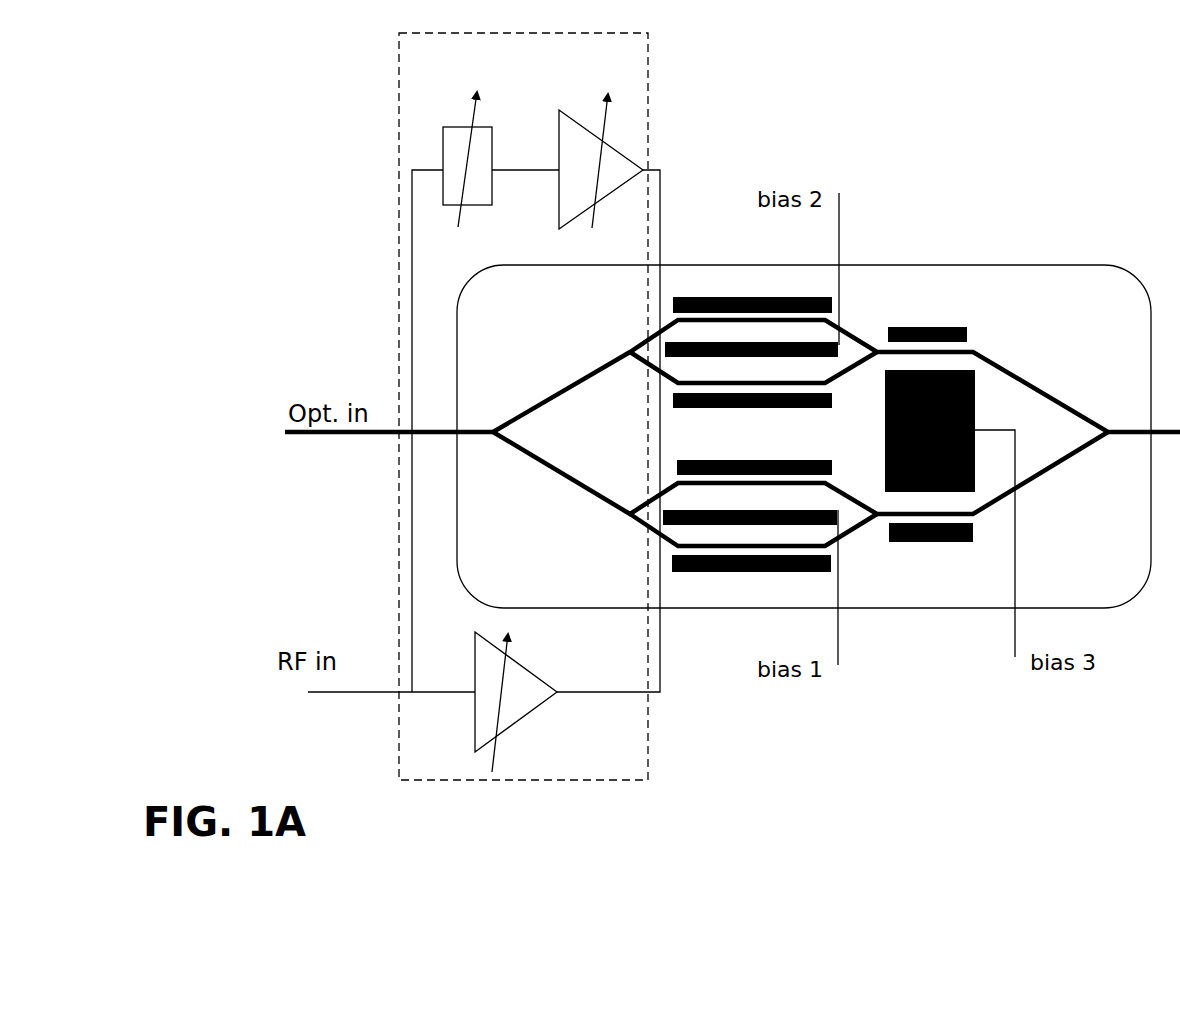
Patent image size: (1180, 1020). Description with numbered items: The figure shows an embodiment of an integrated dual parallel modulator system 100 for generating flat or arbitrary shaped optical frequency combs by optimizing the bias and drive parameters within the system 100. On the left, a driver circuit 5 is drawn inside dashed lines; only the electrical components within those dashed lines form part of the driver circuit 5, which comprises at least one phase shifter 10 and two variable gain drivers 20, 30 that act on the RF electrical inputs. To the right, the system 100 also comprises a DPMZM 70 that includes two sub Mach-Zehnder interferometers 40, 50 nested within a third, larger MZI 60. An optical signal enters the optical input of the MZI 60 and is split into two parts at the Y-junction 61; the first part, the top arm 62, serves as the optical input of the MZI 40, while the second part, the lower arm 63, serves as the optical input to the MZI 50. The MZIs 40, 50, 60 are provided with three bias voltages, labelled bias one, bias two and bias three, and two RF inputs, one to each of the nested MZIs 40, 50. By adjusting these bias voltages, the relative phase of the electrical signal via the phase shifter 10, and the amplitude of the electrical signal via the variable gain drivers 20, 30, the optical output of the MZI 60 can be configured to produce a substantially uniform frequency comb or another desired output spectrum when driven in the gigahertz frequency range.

The driver circuit 5 is at (398, 145).
The phase shifter 10 is at (452, 126).
The variable gain driver 20 is at (567, 117).
The variable gain driver 30 is at (533, 710).
The sub Mach-Zehnder interferometer 40 is at (741, 298).
The sub Mach-Zehnder interferometer 50 is at (701, 570).
The third, larger Mach-Zehnder interferometer 60 is at (1006, 392).
The Y-junction 61 is at (493, 430).
The top arm 62 is at (592, 367).
The lower arm 63 is at (573, 487).
The DPMZM 70 is at (1073, 262).
The dual parallel modulator system 100 is at (898, 698).